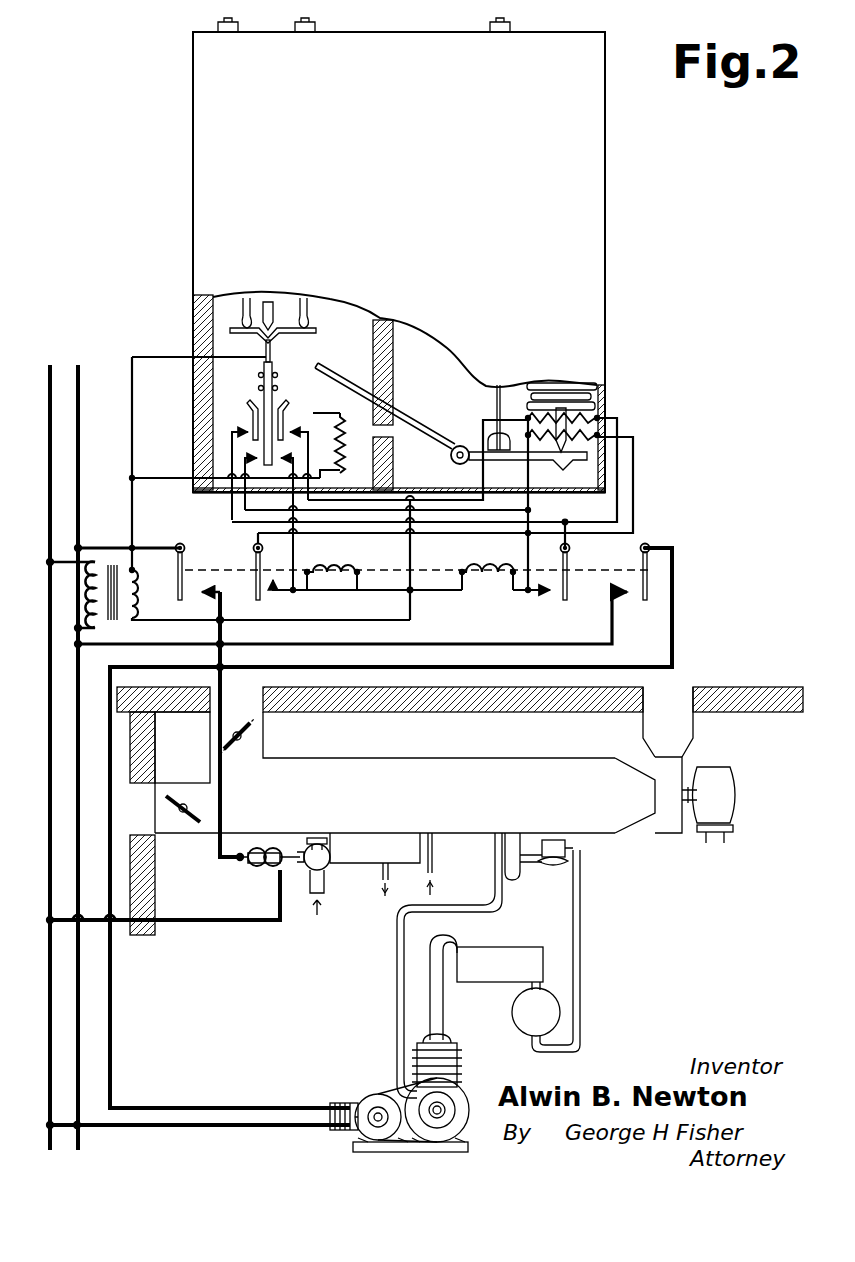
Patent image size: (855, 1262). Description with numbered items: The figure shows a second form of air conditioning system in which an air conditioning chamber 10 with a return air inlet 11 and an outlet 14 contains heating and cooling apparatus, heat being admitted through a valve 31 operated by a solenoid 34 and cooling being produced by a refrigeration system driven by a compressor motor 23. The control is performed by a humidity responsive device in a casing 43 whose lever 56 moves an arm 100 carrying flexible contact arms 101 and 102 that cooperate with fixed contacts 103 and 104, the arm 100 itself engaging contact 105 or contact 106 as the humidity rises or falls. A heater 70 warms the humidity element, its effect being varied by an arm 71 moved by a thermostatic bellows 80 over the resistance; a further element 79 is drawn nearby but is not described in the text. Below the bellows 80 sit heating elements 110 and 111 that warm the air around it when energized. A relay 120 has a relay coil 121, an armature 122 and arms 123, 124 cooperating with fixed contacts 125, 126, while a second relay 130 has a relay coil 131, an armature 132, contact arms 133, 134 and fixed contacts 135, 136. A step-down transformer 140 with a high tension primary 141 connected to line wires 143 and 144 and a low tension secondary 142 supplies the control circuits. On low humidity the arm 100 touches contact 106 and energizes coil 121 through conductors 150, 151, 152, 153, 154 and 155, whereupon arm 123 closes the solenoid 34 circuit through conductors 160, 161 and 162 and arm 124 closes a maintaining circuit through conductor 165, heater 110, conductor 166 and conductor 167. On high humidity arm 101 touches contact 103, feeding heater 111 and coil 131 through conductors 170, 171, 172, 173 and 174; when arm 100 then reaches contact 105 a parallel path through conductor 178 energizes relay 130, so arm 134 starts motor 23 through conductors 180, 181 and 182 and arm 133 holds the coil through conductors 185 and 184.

The air conditioning chamber 10 is at (392, 760).
The return air inlet 11 is at (243, 706).
The outlet 14 is at (680, 690).
The compressor motor 23 is at (372, 1092).
The valve 31 is at (330, 870).
The solenoid 34 is at (262, 870).
The casing 43 is at (605, 268).
The lever 56 is at (283, 335).
The heater 70 is at (350, 340).
The arm 71 is at (399, 425).
The resistor 79 is at (333, 452).
The thermostatic bellows 80 is at (600, 390).
The arm 100 is at (271, 352).
The flexible contact arm 101 is at (258, 381).
The flexible contact arm 102 is at (278, 381).
The fixed contact 103 is at (246, 424).
The fixed contact 104 is at (309, 449).
The contact 105 is at (254, 458).
The contact 106 is at (284, 460).
The heating element 110 is at (603, 415).
The heating element 111 is at (600, 428).
The relay 120 is at (360, 566).
The relay coil 121 is at (320, 558).
The armature 122 is at (232, 568).
The arm 123 is at (198, 570).
The arm 124 is at (236, 601).
The fixed contact 125 is at (218, 581).
The fixed contact 126 is at (273, 593).
The relay 130 is at (490, 560).
The relay coil 131 is at (490, 580).
The armature 132 is at (620, 566).
The contact arm 133 is at (572, 565).
The contact arm 134 is at (650, 590).
The fixed contact 135 is at (540, 598).
The fixed contact 136 is at (622, 606).
The step-down transformer 140 is at (110, 558).
The high tension primary 141 is at (98, 628).
The low tension secondary 142 is at (142, 592).
The line wire 143 is at (50, 368).
The line wire 144 is at (100, 432).
The conductor 150 is at (133, 520).
The conductor 151 is at (143, 447).
The conductor 152 is at (296, 564).
The conductor 153 is at (305, 580).
The conductor 154 is at (364, 584).
The conductor 155 is at (372, 620).
The conductor 160 is at (168, 546).
The conductor 161 is at (220, 820).
The conductor 162 is at (228, 922).
The conductor 165 is at (448, 478).
The conductor 166 is at (633, 495).
The conductor 167 is at (272, 566).
The conductor 170 is at (228, 522).
The conductor 171 is at (528, 472).
The conductor 172 is at (542, 555).
The conductor 173 is at (520, 592).
The conductor 174 is at (452, 592).
The conductor 178 is at (386, 503).
The conductor 180 is at (466, 642).
The conductor 181 is at (675, 632).
The conductor 182 is at (208, 1128).
The conductor 184 is at (537, 598).
The conductor 185 is at (558, 518).